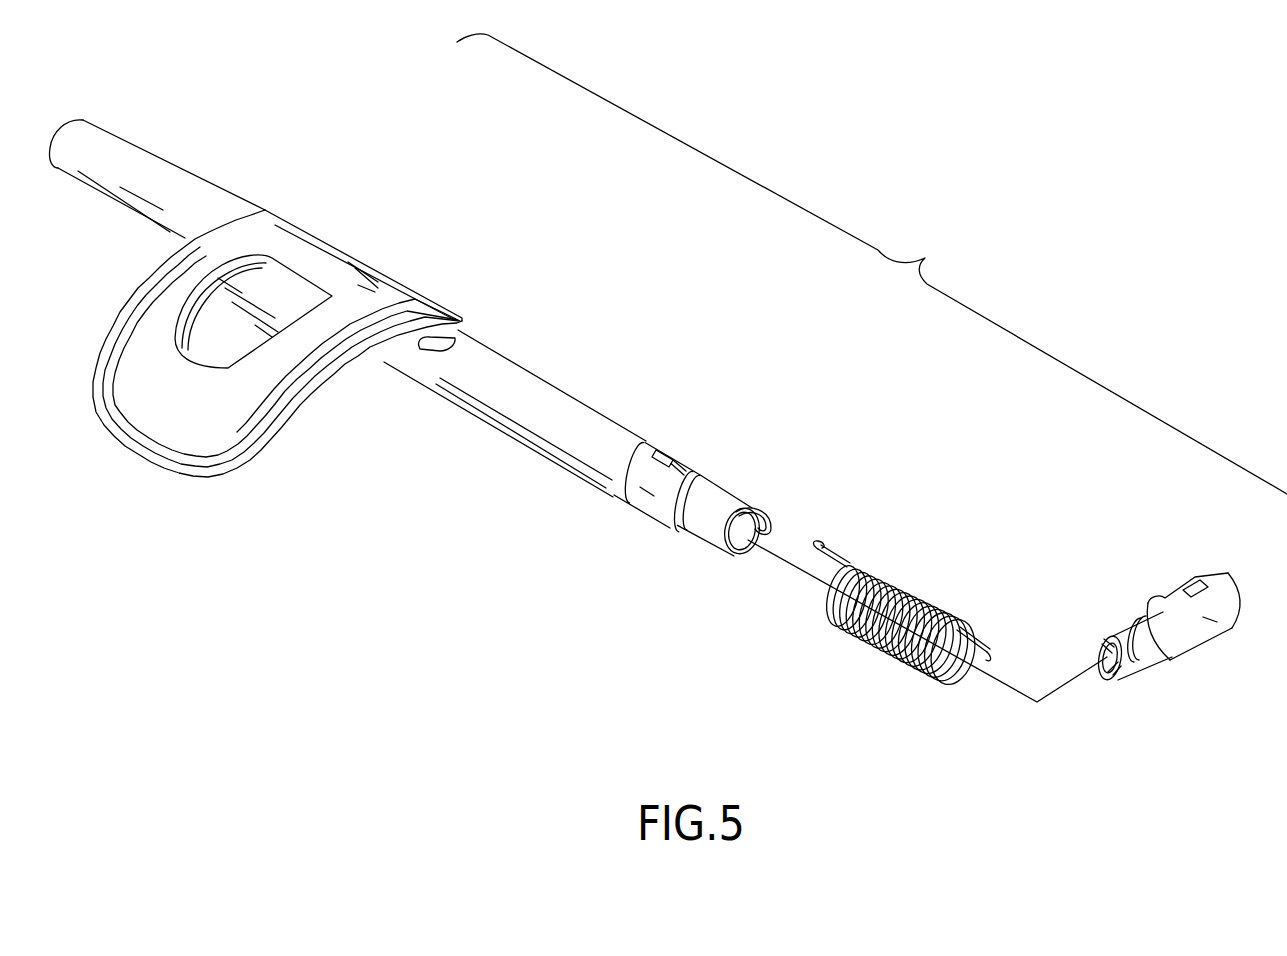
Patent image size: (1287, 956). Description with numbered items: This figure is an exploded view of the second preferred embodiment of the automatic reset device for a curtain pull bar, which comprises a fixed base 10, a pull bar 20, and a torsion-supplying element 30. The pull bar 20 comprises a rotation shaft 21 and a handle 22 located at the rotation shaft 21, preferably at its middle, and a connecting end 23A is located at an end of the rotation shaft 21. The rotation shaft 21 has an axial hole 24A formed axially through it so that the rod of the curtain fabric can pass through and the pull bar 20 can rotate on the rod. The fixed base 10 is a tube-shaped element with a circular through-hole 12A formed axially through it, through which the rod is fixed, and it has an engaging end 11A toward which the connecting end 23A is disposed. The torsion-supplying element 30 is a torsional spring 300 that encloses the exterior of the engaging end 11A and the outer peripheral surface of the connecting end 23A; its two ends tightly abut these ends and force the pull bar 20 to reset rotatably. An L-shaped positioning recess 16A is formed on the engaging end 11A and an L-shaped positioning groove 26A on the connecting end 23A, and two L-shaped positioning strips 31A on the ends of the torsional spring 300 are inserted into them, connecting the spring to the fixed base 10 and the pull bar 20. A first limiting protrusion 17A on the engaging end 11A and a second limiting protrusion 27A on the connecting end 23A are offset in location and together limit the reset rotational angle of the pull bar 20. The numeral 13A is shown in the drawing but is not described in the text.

The fixed base 10 is at (1142, 625).
The engaging end 11A is at (1131, 648).
The through-hole 12A is at (1101, 657).
The connector collar 13A is at (1211, 622).
The positioning recess 16A is at (1167, 574).
The first limiting protrusion 17A is at (1132, 677).
The pull bar 20 is at (358, 311).
The rotation shaft 21 is at (495, 367).
The handle 22 is at (253, 373).
The connecting end 23A is at (771, 523).
The axial hole 24A is at (737, 545).
The positioning groove 26A is at (672, 462).
The second limiting protrusion 27A is at (755, 512).
The torsion-supplying element 30 is at (931, 602).
The positioning strip 31A is at (920, 580).
The torsional spring 300 is at (883, 637).